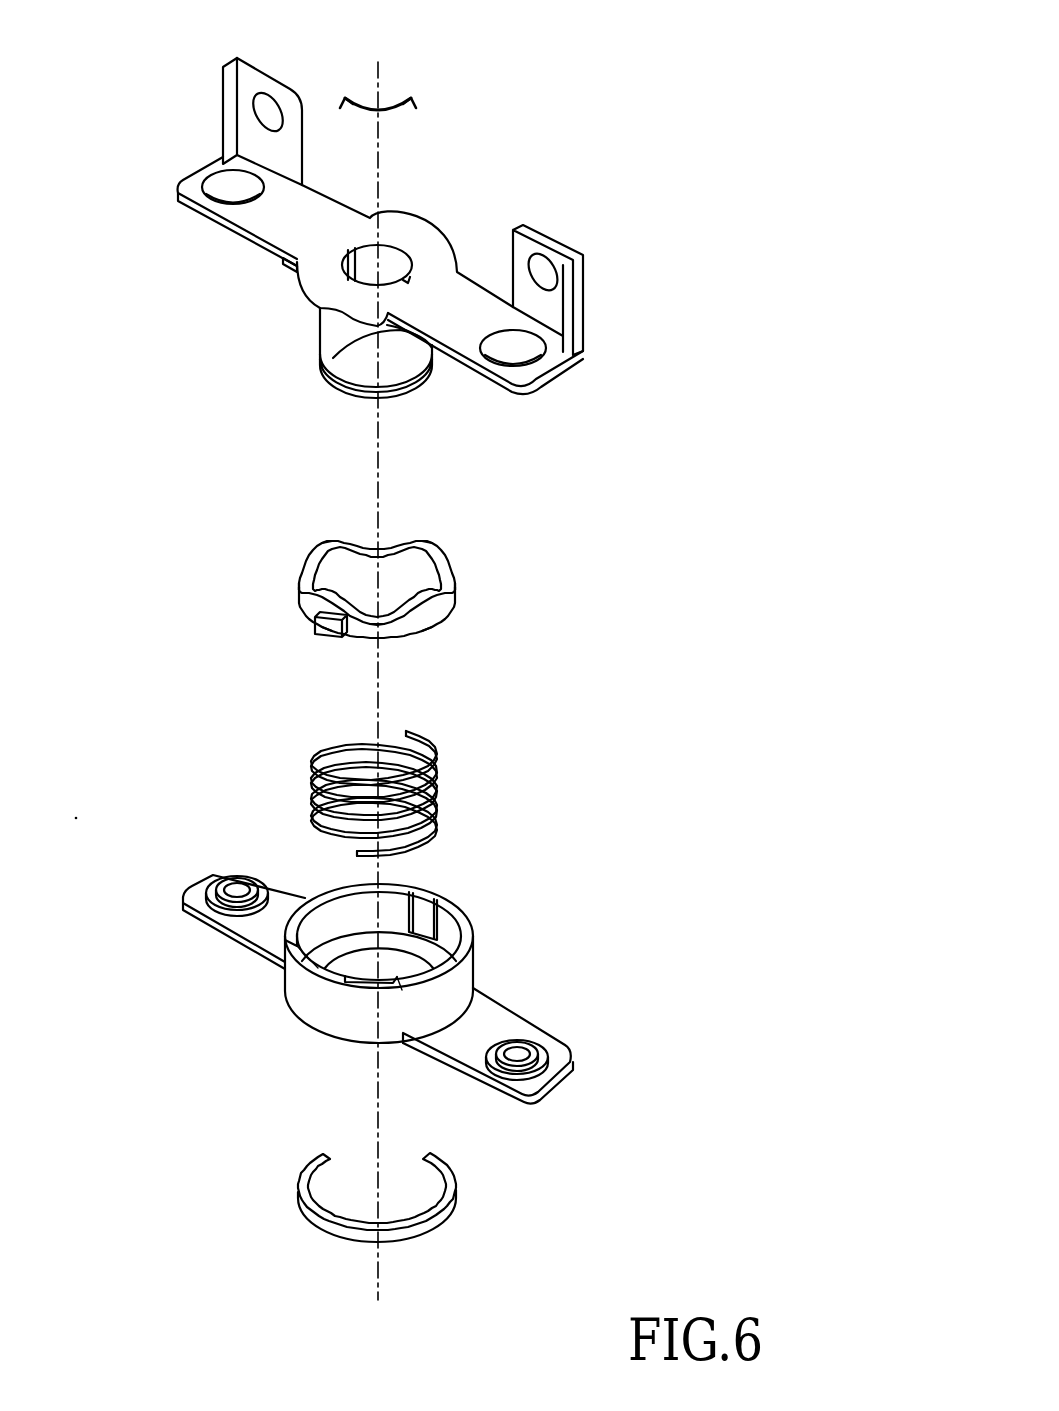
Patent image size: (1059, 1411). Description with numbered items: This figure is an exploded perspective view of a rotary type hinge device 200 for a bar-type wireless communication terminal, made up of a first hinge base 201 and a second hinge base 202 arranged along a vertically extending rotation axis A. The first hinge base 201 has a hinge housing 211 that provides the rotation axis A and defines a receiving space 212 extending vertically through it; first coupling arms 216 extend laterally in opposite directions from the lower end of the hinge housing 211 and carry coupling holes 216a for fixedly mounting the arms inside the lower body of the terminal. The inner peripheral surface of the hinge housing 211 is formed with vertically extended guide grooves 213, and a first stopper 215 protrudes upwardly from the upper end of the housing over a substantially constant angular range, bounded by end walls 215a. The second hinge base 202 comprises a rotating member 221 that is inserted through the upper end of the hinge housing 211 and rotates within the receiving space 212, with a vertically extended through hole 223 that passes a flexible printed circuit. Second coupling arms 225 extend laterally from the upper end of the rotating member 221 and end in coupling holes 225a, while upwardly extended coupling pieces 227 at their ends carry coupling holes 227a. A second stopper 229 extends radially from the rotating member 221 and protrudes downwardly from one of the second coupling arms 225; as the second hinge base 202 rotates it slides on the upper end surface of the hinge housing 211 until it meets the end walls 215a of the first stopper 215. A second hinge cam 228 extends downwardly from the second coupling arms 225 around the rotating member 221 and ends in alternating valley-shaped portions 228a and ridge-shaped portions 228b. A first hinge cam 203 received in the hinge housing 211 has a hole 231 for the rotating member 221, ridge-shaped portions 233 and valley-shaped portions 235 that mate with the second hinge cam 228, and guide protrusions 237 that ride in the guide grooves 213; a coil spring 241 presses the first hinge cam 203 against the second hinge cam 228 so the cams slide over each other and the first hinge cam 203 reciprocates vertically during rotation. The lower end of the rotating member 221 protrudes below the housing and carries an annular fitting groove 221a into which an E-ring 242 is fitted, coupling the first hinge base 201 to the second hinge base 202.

The rotary type hinge device 200 is at (682, 33).
The first hinge base 201 is at (497, 921).
The second hinge base 202 is at (588, 231).
The first hinge cam 203 is at (293, 587).
The hinge housing 211 is at (287, 983).
The receiving space 212 is at (353, 953).
The guide grooves 213 is at (425, 902).
The first stopper 215 is at (360, 983).
The end walls 215a is at (282, 937).
The first coupling arms 216 is at (193, 910).
The coupling holes 216a is at (230, 893).
The rotating member 221 is at (337, 360).
The fitting groove 221a is at (350, 390).
The through hole 223 is at (400, 248).
The second coupling arms 225 is at (327, 207).
The coupling holes 225a is at (217, 183).
The coupling pieces 227 is at (223, 75).
The coupling holes 227a is at (266, 102).
The second hinge cam 228 is at (303, 293).
The valley-shaped portions 228a is at (333, 358).
The ridge-shaped portions 228b is at (433, 357).
The second stopper 229 is at (283, 261).
The hole 231 is at (410, 580).
The ridge-shaped portions 233 is at (343, 538).
The valley-shaped portions 235 is at (380, 548).
The guide protrusions 237 is at (323, 636).
The coil spring 241 is at (440, 753).
The E-ring 242 is at (463, 1184).
The rotation axis A is at (378, 75).